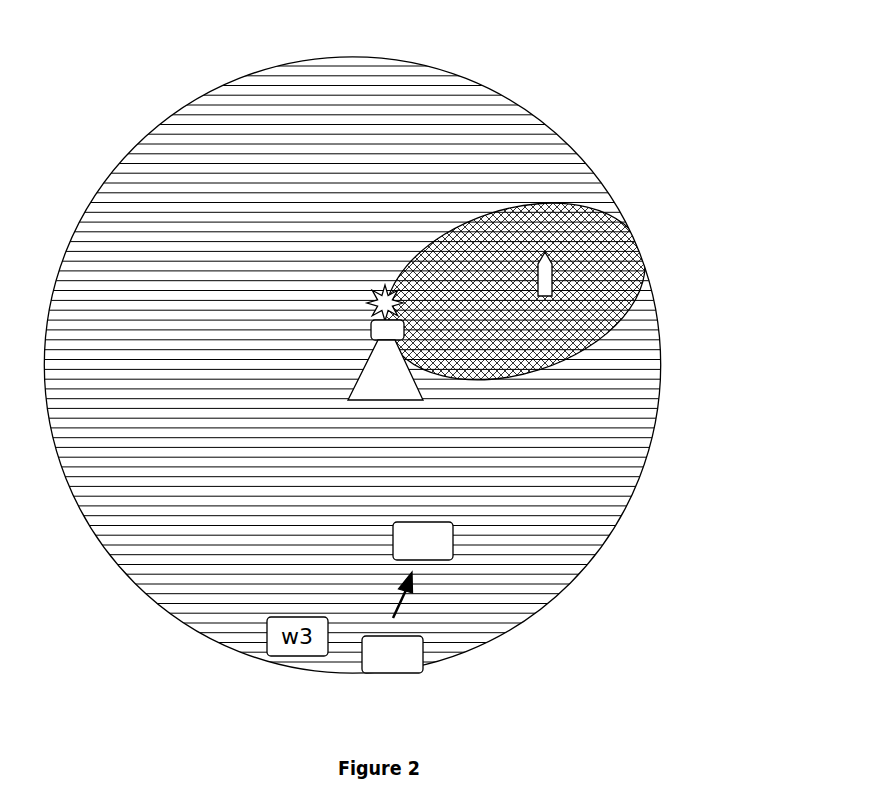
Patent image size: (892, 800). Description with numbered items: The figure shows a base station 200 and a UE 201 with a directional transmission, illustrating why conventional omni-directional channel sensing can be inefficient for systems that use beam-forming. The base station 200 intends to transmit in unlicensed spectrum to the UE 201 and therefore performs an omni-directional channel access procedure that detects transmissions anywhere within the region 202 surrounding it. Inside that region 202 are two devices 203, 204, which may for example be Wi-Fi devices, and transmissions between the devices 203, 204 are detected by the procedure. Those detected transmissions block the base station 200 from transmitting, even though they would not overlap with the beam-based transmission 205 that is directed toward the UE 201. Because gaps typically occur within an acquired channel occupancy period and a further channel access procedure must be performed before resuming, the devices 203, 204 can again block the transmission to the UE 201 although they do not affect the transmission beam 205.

The base station 200 is at (384, 272).
The UE 201 is at (553, 262).
The region 202 is at (510, 102).
The device 203 is at (455, 542).
The device 204 is at (450, 650).
The beam-based transmission 205 is at (573, 207).